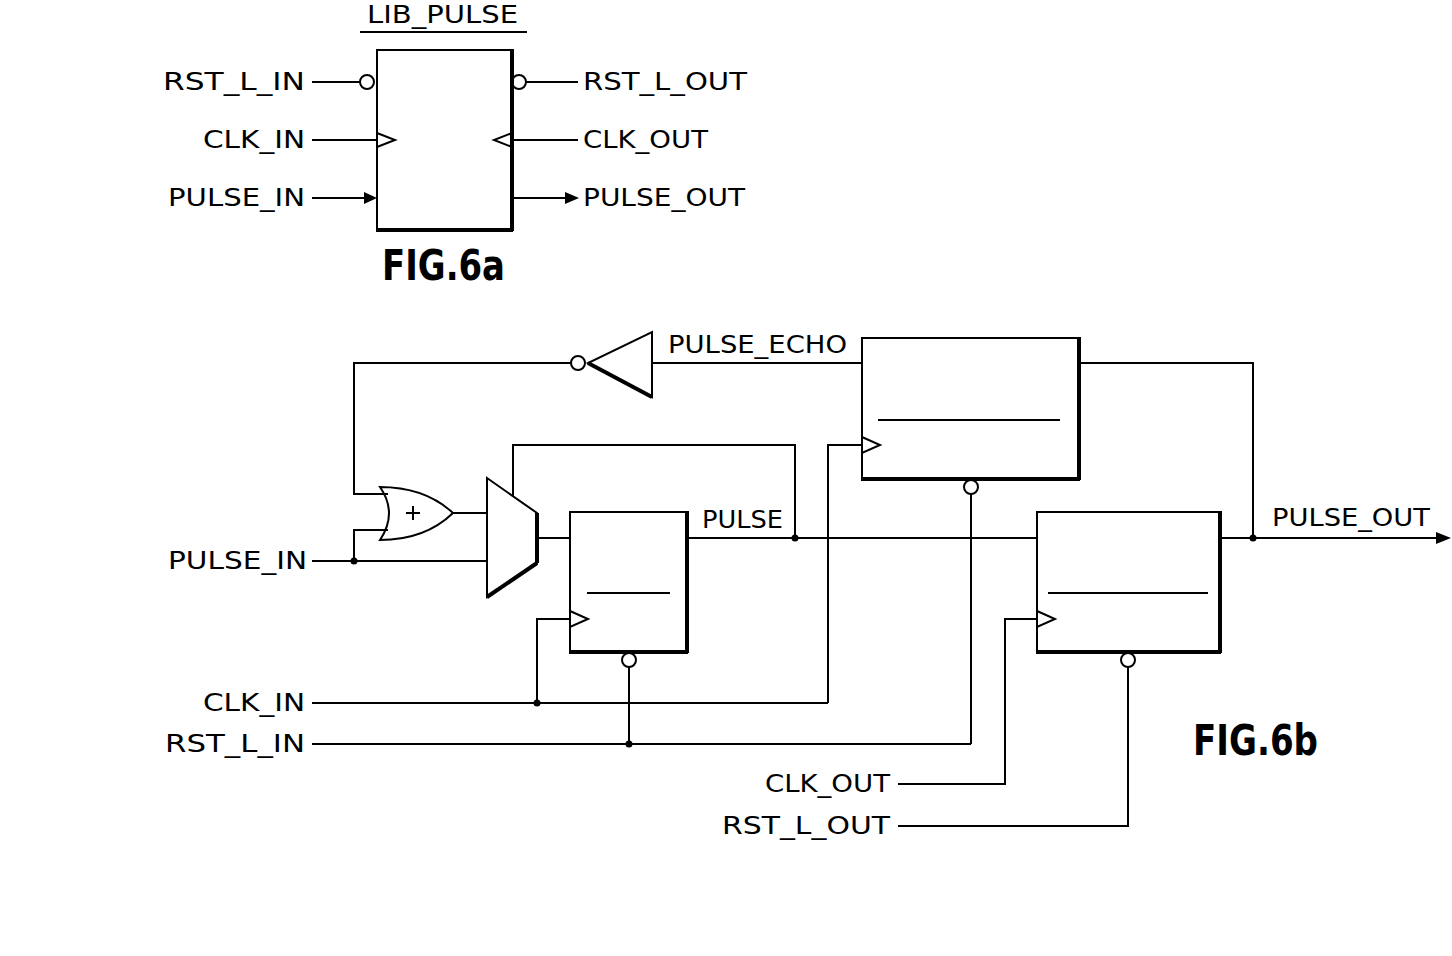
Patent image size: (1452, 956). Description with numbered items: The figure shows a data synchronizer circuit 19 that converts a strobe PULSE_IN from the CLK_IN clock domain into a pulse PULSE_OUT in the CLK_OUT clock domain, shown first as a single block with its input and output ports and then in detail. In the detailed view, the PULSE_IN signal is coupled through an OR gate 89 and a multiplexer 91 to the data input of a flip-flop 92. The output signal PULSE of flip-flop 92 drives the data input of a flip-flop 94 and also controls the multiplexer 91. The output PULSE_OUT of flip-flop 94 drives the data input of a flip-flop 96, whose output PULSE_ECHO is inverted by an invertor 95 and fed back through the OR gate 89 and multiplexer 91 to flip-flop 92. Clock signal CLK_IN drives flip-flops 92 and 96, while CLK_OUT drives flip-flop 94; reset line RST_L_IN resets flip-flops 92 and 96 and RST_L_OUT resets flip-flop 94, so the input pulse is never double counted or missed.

In FIG. 6A, the data synchronizer circuit 19 is at (460, 132).
In FIG. 6B, the OR gate 89 is at (411, 487).
In FIG. 6B, the multiplexer 91 is at (504, 590).
In FIG. 6B, the flip-flop 92 is at (652, 512).
In FIG. 6B, the flip-flop 94 is at (1161, 512).
In FIG. 6B, the invertor 95 is at (618, 384).
In FIG. 6B, the flip-flop 96 is at (1027, 338).